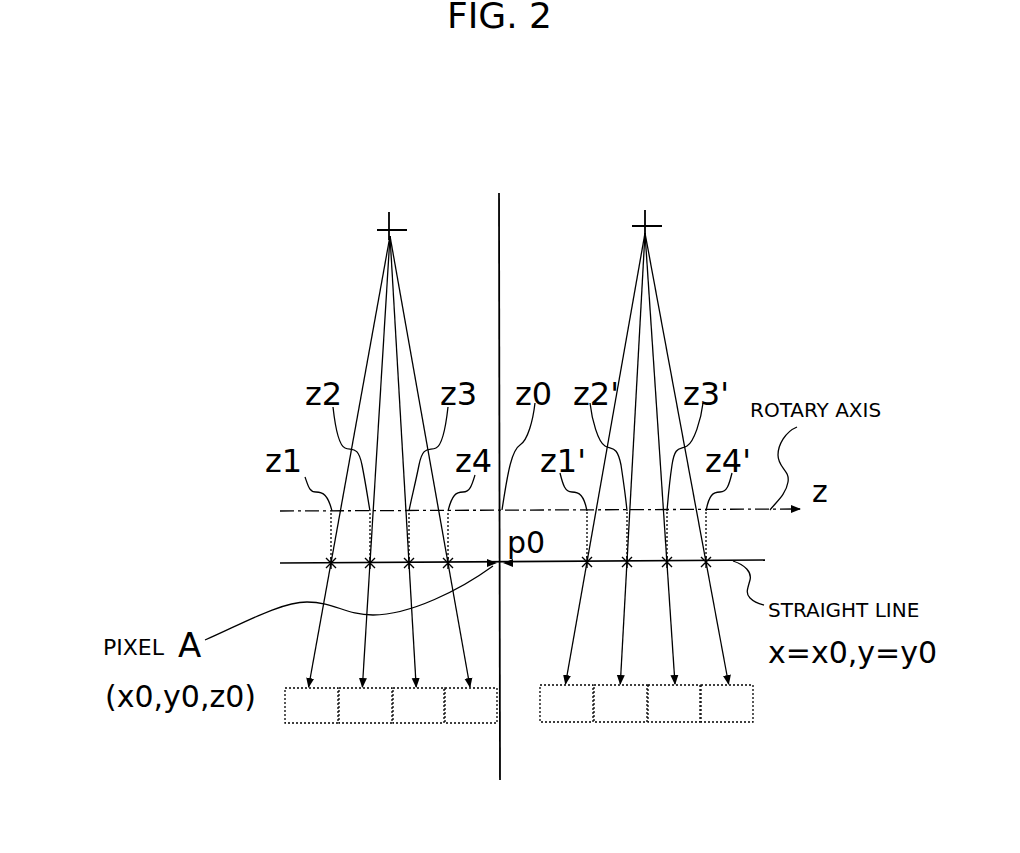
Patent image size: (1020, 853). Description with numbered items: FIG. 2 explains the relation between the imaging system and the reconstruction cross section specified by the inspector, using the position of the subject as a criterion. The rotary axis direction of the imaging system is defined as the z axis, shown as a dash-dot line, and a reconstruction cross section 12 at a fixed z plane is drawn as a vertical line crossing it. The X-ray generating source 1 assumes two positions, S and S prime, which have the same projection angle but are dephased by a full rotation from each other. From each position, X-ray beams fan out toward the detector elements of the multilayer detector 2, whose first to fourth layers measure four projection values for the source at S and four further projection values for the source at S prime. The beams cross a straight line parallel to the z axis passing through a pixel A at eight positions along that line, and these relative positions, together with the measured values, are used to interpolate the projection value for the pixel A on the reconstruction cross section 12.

The X-ray generating source 1 is at (392, 228).
The multilayer detector 2 is at (287, 700).
The reconstruction cross section R(z=z0) 12 is at (502, 262).